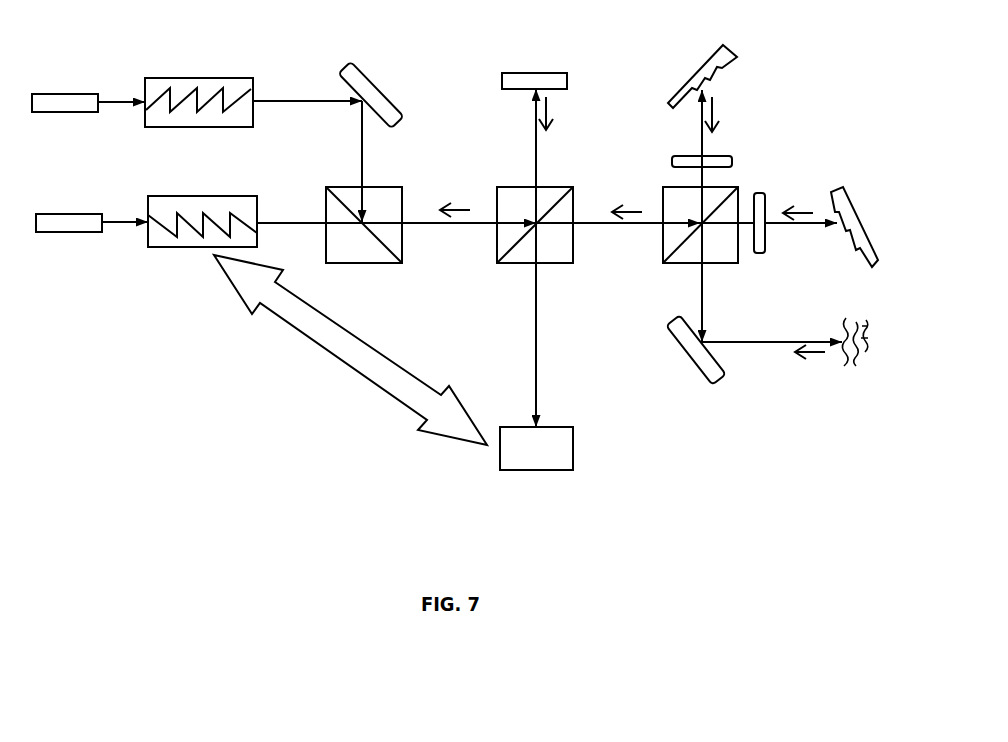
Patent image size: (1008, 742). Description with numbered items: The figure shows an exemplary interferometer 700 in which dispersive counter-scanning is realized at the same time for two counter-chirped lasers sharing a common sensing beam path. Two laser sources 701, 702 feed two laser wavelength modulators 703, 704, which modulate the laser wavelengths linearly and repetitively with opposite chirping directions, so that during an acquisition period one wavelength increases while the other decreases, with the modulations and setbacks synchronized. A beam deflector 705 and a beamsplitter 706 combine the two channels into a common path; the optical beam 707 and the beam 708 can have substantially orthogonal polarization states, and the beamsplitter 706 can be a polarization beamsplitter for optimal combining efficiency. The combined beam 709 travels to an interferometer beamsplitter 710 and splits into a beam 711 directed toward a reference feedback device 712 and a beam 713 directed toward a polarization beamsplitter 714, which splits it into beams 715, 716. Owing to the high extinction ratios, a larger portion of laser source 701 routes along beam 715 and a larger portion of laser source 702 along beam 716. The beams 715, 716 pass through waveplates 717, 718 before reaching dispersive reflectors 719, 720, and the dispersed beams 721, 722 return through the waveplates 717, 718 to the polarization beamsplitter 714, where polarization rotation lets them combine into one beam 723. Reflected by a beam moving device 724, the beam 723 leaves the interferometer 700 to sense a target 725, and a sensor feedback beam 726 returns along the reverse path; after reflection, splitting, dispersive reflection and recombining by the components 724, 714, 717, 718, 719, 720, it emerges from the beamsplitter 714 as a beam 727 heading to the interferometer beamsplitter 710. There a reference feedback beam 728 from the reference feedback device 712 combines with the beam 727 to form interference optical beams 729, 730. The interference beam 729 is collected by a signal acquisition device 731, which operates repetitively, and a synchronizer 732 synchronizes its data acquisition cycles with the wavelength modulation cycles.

The interferometer 700 is at (165, 363).
The laser source 701 is at (82, 203).
The laser source 702 is at (78, 86).
The laser wavelength modulator 703 is at (212, 189).
The laser wavelength modulator 704 is at (206, 72).
The beam deflector 705 is at (328, 72).
The beamsplitter 706 is at (355, 268).
The optical beam 707 is at (352, 170).
The beam 708 is at (293, 205).
The combined beam 709 is at (455, 237).
The interferometer beamsplitter 710 is at (506, 180).
The beam 711 is at (525, 122).
The reference feedback device 712 is at (545, 66).
The beam 713 is at (625, 236).
The polarization beamsplitter 714 is at (670, 272).
The beam 715 is at (807, 232).
The beam 716 is at (690, 140).
The waveplate 717 is at (758, 258).
The waveplate 718 is at (740, 156).
The dispersive reflector 719 is at (848, 250).
The dispersive reflector 720 is at (738, 78).
The dispersed beam 721 is at (796, 200).
The dispersed beam 722 is at (715, 124).
The beam 723 is at (757, 350).
The beam moving device 724 is at (690, 367).
The target 725 is at (855, 377).
The sensor feedback beam 726 is at (803, 358).
The beam 727 is at (626, 200).
The reference feedback beam 728 is at (553, 114).
The interference optical beam 729 is at (525, 347).
The interference optical beam 730 is at (448, 196).
The signal acquisition device 731 is at (510, 416).
The synchronizer 732 is at (336, 371).